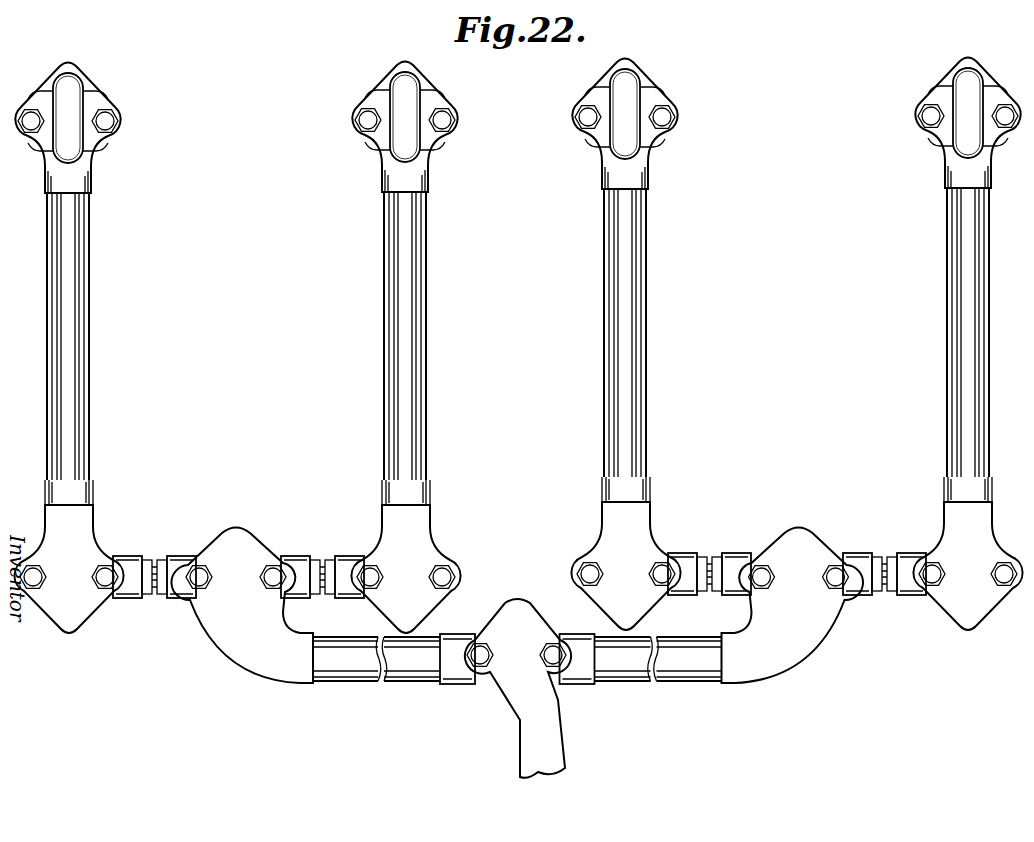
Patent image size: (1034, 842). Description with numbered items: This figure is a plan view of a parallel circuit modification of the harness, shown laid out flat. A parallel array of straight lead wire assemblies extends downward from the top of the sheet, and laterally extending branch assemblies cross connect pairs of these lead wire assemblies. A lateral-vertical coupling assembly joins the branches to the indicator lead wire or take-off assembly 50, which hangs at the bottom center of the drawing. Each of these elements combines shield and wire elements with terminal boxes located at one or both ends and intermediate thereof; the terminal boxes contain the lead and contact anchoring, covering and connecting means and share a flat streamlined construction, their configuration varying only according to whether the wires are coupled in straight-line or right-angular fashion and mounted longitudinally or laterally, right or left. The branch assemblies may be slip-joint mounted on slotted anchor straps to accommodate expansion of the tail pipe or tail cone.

The indicator lead wire or take-off assembly 50 is at (548, 735).